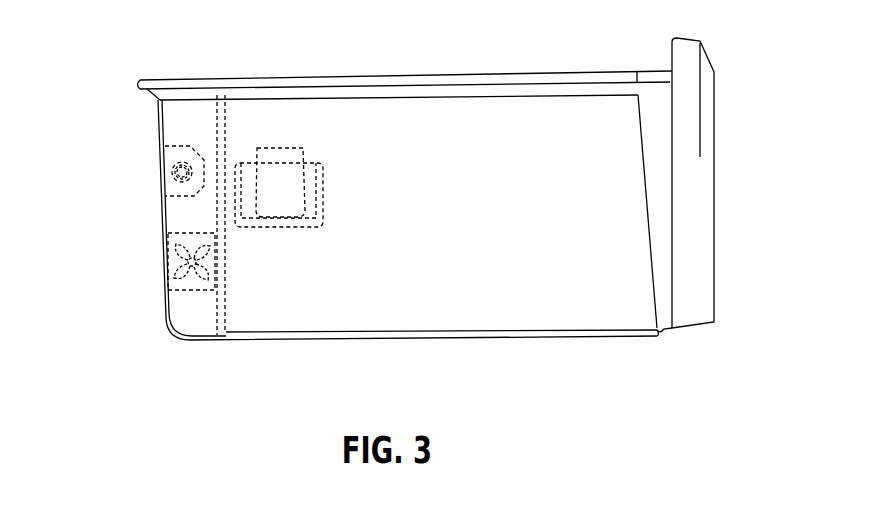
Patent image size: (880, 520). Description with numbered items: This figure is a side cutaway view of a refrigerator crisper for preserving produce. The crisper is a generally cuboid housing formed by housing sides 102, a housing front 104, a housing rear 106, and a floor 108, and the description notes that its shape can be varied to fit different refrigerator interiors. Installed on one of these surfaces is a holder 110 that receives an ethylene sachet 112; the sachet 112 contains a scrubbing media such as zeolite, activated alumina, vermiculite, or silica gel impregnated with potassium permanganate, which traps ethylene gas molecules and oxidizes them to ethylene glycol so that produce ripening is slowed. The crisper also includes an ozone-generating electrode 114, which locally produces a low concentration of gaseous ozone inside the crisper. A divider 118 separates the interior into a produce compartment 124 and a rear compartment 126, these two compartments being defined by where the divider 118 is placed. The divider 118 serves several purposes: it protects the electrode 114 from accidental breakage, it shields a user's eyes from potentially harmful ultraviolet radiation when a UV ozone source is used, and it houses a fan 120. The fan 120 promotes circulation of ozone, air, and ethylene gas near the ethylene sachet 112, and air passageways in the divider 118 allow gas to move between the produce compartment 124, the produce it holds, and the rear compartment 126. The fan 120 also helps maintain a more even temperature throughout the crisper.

The housing sides 102 is at (543, 268).
The housing front 104 is at (702, 198).
The housing rear 106 is at (162, 272).
The floor 108 is at (392, 336).
The holder 110 is at (317, 219).
The ethylene sachet 112 is at (287, 155).
The ozone-generating electrode 114 is at (162, 164).
The divider 118 is at (222, 302).
The fan 120 is at (178, 235).
The produce compartment 124 is at (408, 148).
The rear compartment 126 is at (175, 136).